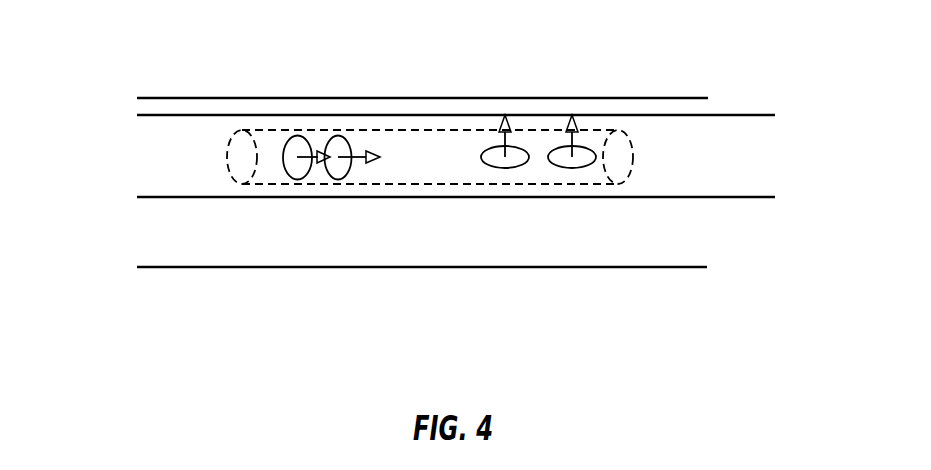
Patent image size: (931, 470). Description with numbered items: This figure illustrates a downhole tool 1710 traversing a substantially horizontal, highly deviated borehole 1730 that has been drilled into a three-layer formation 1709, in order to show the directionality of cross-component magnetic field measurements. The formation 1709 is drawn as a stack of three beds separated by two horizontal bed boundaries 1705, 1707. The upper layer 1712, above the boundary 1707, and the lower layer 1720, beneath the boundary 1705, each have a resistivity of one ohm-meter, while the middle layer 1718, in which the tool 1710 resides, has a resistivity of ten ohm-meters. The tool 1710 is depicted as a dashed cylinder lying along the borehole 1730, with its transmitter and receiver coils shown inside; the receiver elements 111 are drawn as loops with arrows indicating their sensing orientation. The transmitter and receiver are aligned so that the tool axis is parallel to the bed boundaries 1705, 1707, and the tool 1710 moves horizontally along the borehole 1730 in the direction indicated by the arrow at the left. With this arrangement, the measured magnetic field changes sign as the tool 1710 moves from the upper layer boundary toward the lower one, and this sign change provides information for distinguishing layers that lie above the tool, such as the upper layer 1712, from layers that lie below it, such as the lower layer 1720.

The upper layer 1712 is at (482, 51).
The bed boundary 1707 is at (350, 97).
The highly deviated borehole 1730 is at (736, 115).
The tool 1710 is at (263, 143).
The three-layer formation 1709 is at (121, 151).
The receiver antennas 111 is at (517, 163).
The middle layer 1718 is at (776, 229).
The bed boundary 1705 is at (338, 267).
The lower layer 1720 is at (716, 294).